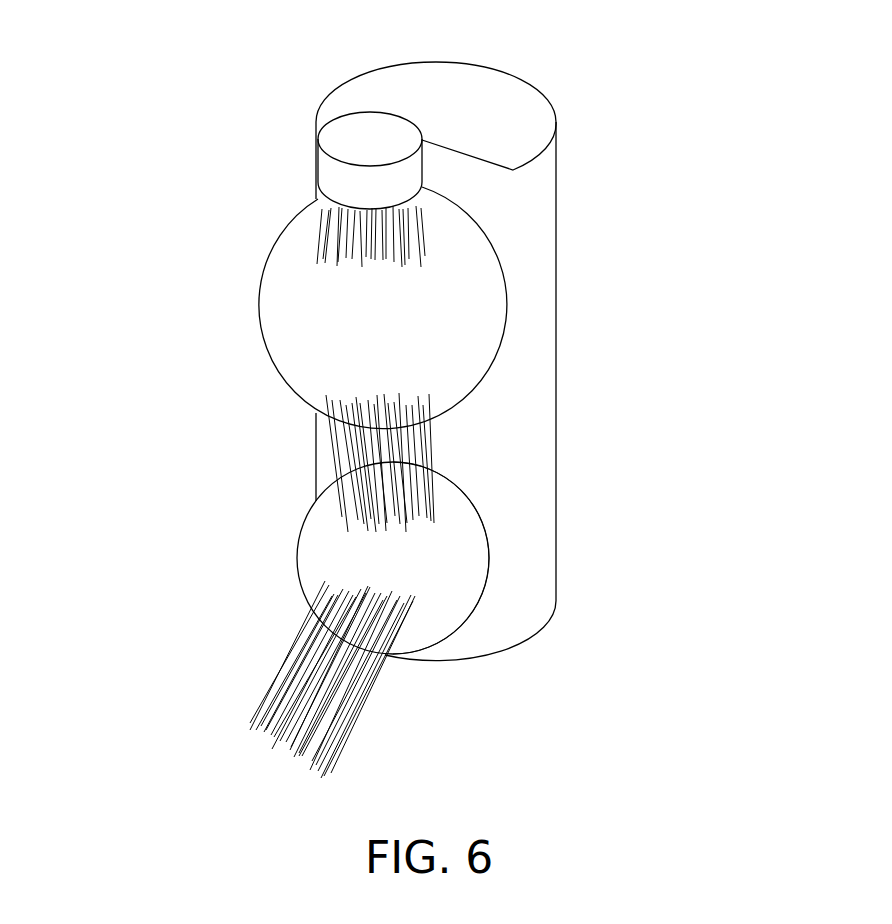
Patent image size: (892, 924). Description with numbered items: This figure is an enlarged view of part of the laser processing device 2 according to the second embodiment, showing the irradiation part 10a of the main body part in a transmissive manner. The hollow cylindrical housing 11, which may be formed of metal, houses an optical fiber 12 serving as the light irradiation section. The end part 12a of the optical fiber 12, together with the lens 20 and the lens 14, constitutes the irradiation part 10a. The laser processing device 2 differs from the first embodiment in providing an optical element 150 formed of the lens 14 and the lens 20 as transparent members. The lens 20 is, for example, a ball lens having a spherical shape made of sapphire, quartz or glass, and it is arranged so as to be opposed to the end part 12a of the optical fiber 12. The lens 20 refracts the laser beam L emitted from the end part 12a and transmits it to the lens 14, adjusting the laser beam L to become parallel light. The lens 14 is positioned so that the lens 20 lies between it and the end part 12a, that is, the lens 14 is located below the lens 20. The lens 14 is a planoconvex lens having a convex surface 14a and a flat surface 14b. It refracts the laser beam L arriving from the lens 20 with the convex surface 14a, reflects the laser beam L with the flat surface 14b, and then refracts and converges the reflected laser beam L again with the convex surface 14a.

The laser processing device 2 is at (122, 112).
The irradiation part 10a is at (648, 63).
The housing 11 is at (423, 87).
The optical fiber 12 is at (358, 132).
The end part of the optical fiber 12a is at (307, 152).
The laser beam L is at (327, 213).
The lens 20 is at (478, 327).
The optical element 150 is at (713, 371).
The lens 14 is at (477, 553).
The convex surface 14a is at (458, 596).
The flat surface 14b is at (447, 642).